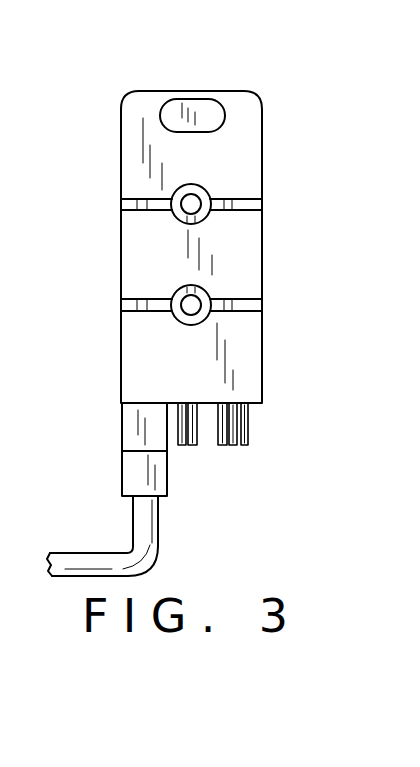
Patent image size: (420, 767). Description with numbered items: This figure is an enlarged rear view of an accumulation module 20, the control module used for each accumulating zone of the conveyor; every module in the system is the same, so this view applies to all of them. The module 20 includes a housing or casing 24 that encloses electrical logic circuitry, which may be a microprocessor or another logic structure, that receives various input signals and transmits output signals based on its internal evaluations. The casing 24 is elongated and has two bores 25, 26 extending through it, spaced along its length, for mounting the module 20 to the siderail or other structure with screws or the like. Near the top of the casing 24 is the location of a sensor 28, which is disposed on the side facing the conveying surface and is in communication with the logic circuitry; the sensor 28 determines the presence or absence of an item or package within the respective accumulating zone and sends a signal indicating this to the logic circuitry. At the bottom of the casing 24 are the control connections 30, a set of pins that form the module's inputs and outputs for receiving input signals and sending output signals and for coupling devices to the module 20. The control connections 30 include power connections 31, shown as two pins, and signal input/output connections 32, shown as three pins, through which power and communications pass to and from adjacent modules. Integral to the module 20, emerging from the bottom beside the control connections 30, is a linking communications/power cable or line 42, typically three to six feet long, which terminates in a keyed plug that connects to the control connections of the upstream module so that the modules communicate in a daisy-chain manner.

The accumulation module 20 is at (244, 77).
The housing or casing 24 is at (263, 133).
The bore 25 is at (193, 203).
The bore 26 is at (192, 303).
The sensor 28 is at (210, 115).
The control connections 30 is at (267, 513).
The power connections 31 is at (191, 458).
The signal input/output connections 32 is at (234, 458).
The linking communications/power cable or line 42 is at (100, 562).